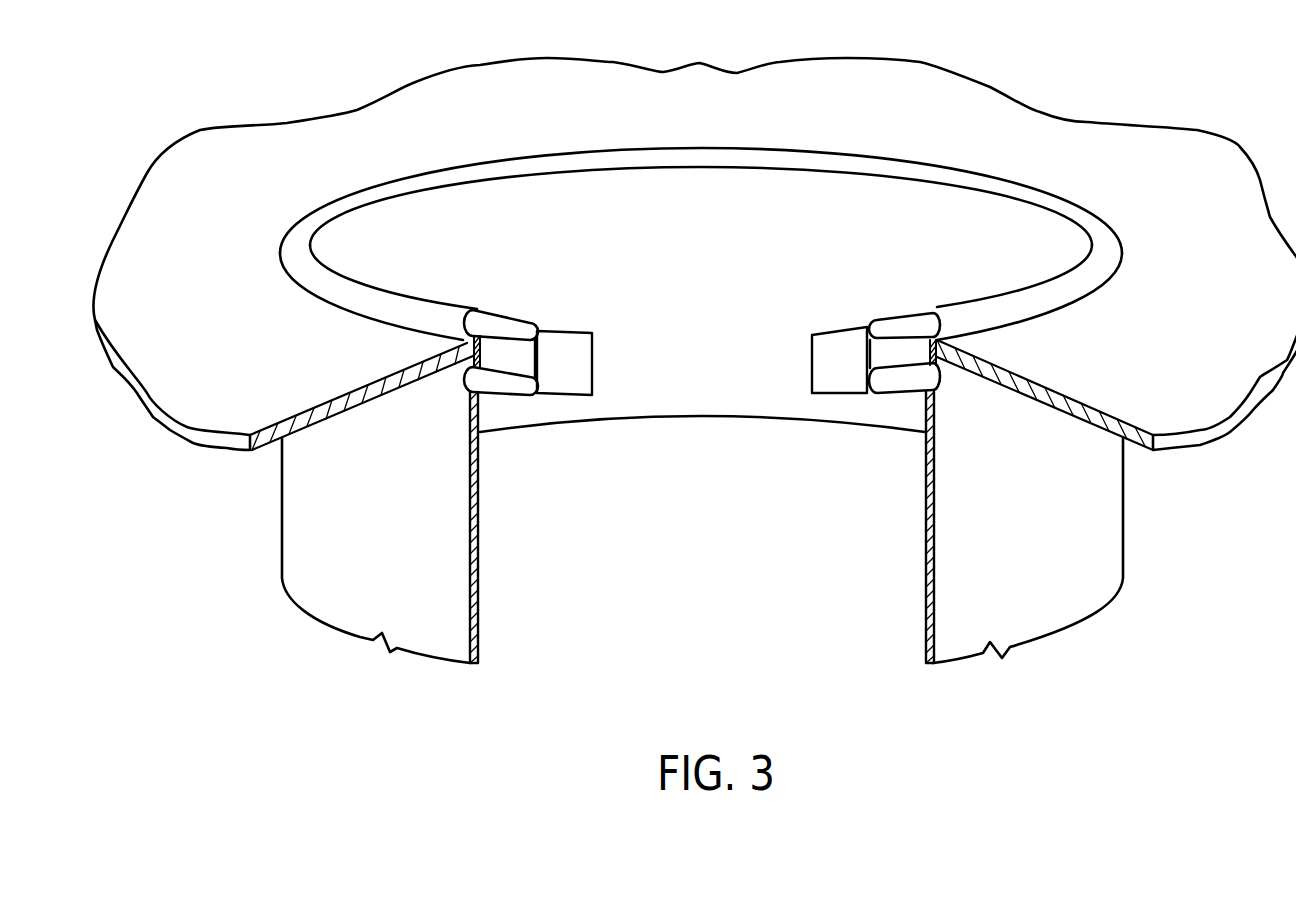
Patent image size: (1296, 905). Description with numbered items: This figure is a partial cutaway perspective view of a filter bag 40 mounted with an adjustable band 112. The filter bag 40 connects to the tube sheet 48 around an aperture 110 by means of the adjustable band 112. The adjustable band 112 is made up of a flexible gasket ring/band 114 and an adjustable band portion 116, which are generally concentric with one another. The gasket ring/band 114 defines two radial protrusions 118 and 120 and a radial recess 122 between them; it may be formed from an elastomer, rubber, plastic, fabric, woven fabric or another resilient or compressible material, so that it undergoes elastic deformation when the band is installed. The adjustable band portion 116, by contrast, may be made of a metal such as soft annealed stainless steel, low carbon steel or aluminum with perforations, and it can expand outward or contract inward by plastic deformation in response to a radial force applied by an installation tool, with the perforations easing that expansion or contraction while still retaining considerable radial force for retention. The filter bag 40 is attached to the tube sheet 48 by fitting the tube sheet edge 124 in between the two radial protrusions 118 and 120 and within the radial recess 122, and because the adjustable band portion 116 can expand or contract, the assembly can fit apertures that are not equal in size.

The filter bag 40 is at (310, 537).
The tube sheet 48 is at (158, 361).
The aperture 110 is at (700, 387).
The adjustable band 112 is at (827, 466).
The gasket ring/band 114 is at (867, 354).
The adjustable band portion 116 is at (827, 342).
The radial protrusion 118 is at (492, 326).
The radial protrusion 120 is at (505, 384).
The radial recess 122 is at (518, 358).
The tube sheet edge 124 is at (928, 352).